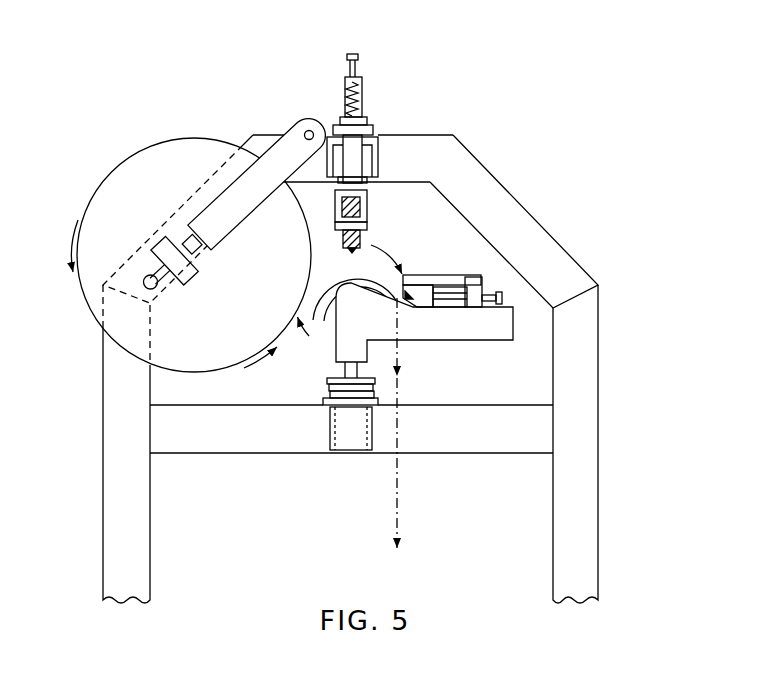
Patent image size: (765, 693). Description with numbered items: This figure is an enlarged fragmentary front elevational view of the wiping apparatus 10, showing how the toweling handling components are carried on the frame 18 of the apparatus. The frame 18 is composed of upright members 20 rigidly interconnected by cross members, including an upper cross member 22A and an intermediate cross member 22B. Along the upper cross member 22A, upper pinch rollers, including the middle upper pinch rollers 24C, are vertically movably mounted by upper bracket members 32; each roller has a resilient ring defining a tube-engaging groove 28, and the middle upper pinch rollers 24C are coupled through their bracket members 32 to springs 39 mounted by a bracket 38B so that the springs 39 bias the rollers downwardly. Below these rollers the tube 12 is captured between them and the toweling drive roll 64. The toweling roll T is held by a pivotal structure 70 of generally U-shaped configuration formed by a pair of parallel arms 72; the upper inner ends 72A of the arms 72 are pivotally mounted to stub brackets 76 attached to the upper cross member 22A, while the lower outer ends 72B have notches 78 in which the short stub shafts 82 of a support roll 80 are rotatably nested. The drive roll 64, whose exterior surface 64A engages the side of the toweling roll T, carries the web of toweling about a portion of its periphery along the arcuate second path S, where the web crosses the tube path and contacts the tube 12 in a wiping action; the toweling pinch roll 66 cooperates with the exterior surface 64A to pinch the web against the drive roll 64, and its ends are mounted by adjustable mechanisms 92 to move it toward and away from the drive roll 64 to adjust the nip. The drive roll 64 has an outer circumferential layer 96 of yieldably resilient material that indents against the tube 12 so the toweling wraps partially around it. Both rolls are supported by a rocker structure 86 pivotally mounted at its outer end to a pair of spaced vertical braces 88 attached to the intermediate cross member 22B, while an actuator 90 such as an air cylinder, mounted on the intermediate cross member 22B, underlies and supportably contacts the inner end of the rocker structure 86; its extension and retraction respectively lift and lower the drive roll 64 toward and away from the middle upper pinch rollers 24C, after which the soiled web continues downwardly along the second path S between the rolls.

The wiping apparatus 10 is at (566, 96).
The tube 12 is at (352, 255).
The frame 18 is at (102, 549).
The upright members 20 is at (590, 498).
The upper cross member 22A is at (278, 140).
The intermediate cross member 22B is at (203, 430).
The middle upper pinch rollers 24C is at (366, 205).
The tube-engaging groove 28 is at (380, 140).
The upper bracket members 32 is at (360, 195).
The bracket 38B is at (362, 90).
The springs 39 is at (363, 106).
The toweling drive roll 64 is at (325, 287).
The exterior surface of drive roll 64A is at (362, 240).
The toweling pinch roll 66 is at (423, 292).
The pivotal structure 70 is at (216, 188).
The arms 72 is at (248, 182).
The upper inner ends of arms 72A is at (312, 168).
The lower outer ends of arms 72B is at (197, 290).
The stub brackets 76 is at (324, 132).
The notches 78 is at (165, 230).
The support roll 80 is at (190, 232).
The stub shafts 82 is at (198, 256).
The rocker structure 86 is at (490, 343).
The vertical braces 88 is at (380, 343).
The actuator 90 is at (330, 412).
The adjustable mechanisms 92 is at (467, 282).
The outer circumferential layer 96 is at (334, 343).
The second path S is at (333, 250).
The toweling roll T is at (133, 353).